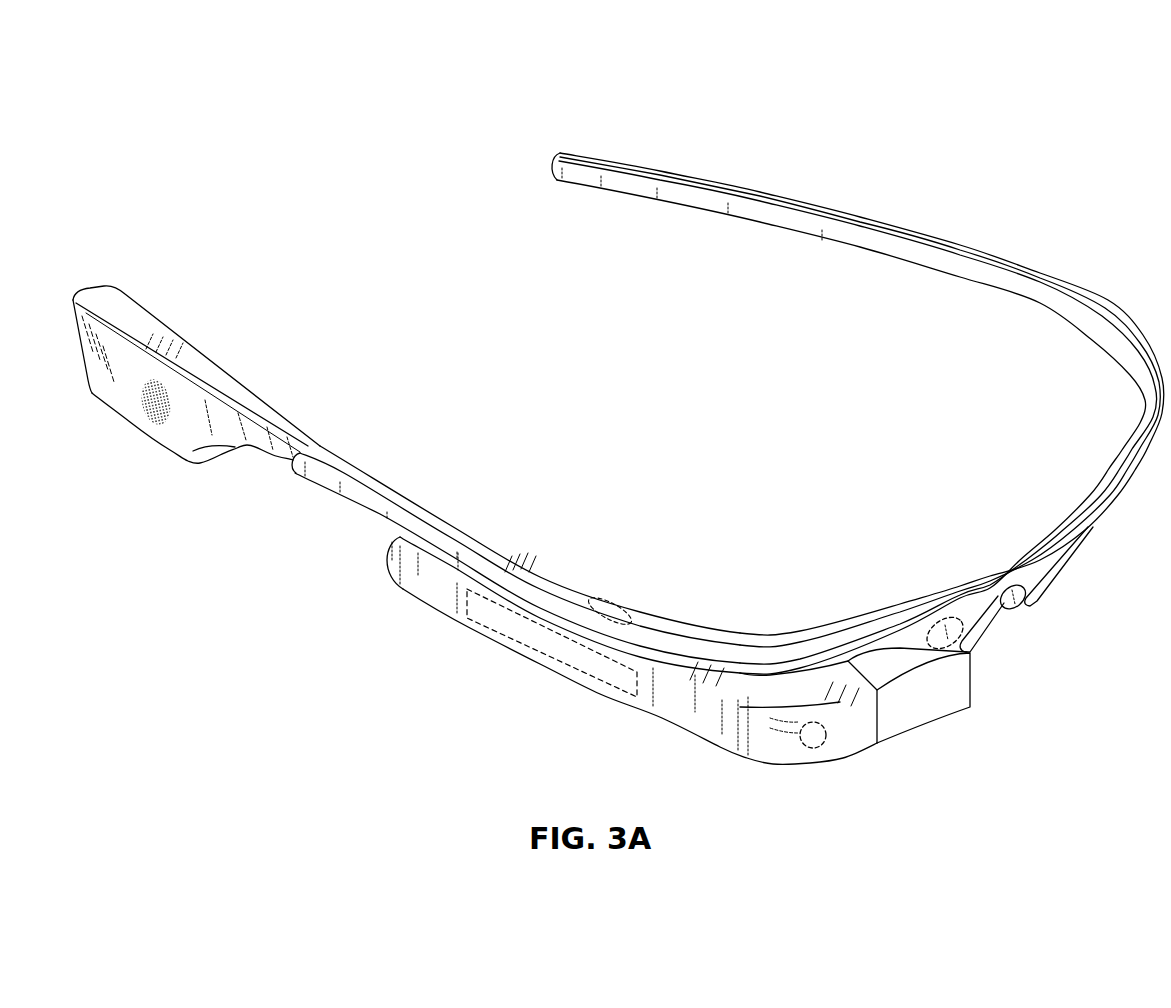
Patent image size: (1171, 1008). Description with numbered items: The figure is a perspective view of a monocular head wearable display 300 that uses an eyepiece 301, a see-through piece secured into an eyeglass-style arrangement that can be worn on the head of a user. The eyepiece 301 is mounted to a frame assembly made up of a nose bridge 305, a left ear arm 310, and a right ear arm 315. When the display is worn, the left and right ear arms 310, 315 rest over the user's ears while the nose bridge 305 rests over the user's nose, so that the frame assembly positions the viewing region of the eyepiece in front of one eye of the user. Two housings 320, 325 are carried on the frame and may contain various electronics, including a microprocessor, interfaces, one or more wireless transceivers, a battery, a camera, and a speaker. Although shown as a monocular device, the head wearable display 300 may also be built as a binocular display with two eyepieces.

The head wearable display 300 is at (1040, 97).
The eyepiece 301 is at (923, 698).
The nose bridge 305 is at (1053, 640).
The left ear arm 310 is at (857, 223).
The right ear arm 315 is at (447, 523).
The housing 320 is at (662, 712).
The housing 325 is at (197, 452).